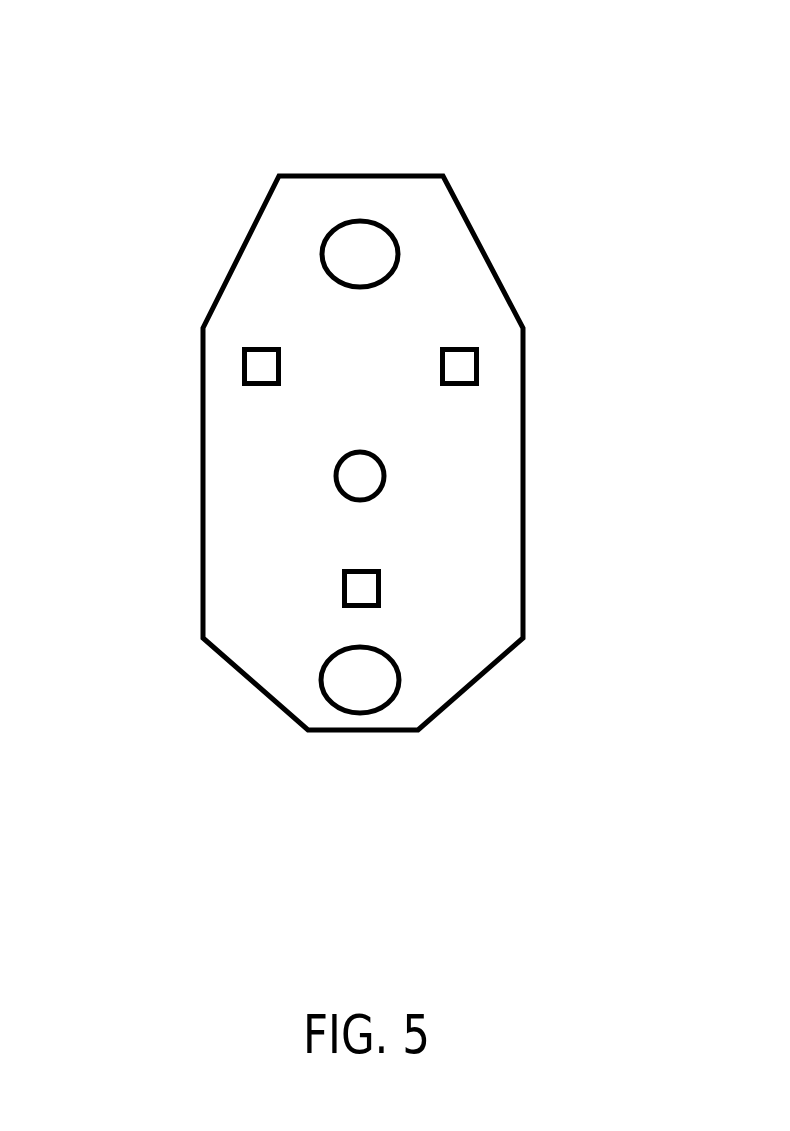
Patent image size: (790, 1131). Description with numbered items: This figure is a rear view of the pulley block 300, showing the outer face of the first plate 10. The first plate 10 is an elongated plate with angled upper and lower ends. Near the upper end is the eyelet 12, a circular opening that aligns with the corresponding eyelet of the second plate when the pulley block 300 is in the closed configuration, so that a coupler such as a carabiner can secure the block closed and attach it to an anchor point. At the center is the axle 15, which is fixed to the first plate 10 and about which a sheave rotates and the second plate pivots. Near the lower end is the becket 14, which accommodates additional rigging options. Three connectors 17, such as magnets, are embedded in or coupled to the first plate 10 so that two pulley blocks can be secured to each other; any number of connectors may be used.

The pulley block 300 is at (518, 95).
The first plate 10 is at (448, 258).
The eyelet 12 is at (321, 260).
The becket 14 is at (400, 678).
The axle 15 is at (385, 476).
The connectors 17 is at (242, 368).